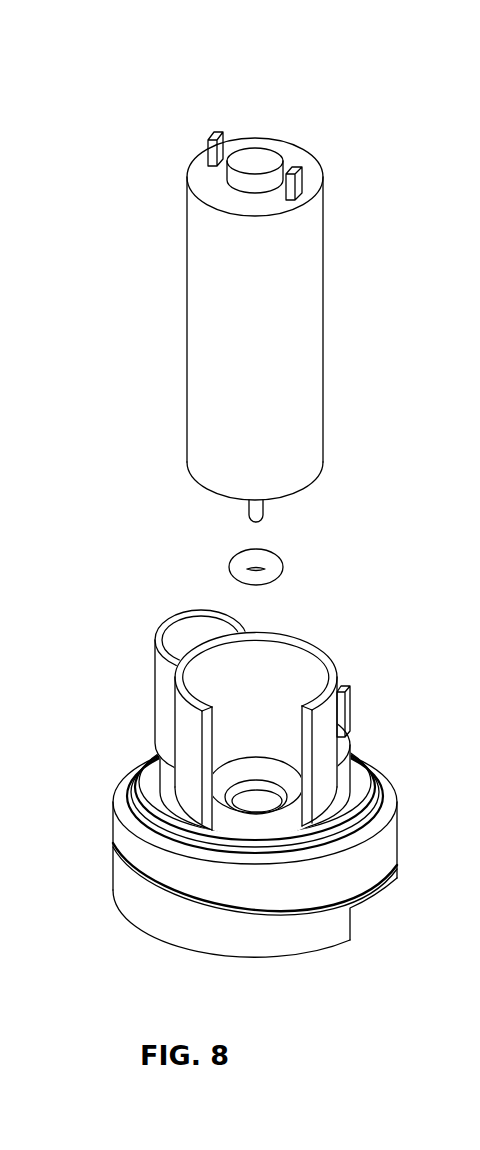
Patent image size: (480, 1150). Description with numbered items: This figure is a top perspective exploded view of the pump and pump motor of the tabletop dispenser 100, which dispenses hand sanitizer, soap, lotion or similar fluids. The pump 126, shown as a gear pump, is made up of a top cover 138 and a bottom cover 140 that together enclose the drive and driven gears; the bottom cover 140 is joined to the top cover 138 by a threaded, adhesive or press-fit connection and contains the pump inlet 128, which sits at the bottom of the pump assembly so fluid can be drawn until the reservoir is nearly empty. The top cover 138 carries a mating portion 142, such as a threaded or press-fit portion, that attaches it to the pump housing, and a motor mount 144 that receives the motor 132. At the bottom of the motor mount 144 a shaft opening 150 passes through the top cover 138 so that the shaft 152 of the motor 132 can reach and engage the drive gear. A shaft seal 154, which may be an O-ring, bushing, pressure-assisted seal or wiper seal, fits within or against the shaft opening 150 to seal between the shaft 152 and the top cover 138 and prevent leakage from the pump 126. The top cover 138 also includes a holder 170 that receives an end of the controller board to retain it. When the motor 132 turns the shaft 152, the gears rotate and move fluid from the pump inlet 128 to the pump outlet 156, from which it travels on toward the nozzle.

The tabletop dispenser 100 is at (143, 75).
The pump 126 is at (105, 695).
The pump inlet 128 is at (378, 905).
The motor 132 is at (196, 298).
The top cover 138 is at (120, 838).
The bottom cover 140 is at (120, 878).
The mating portion 142 is at (289, 802).
The motor mount 144 is at (327, 758).
The shaft opening 150 is at (257, 788).
The shaft 152 is at (263, 515).
The shaft seal 154 is at (232, 566).
The pump outlet 156 is at (185, 640).
The holder 170 is at (369, 692).